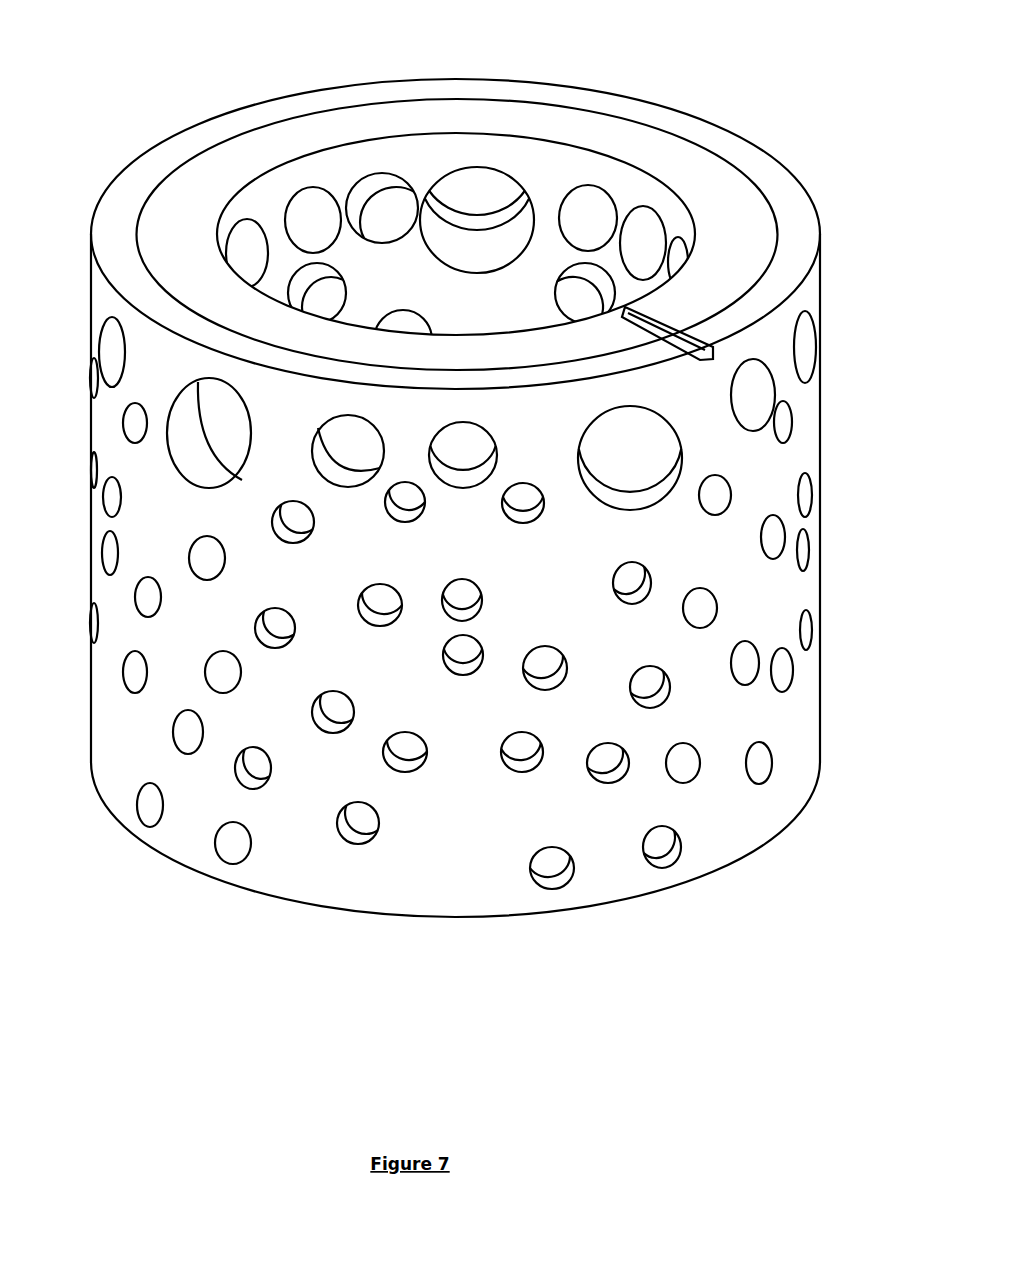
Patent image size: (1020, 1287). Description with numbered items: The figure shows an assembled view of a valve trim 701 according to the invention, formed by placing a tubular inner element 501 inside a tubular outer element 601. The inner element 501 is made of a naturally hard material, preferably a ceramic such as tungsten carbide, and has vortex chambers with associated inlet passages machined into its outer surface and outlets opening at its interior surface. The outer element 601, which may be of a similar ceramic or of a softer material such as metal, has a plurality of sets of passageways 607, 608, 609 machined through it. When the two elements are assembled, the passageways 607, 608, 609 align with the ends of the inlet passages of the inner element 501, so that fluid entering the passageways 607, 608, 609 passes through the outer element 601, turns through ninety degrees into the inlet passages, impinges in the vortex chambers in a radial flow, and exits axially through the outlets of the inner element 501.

The valve trim 701 is at (450, 492).
The tubular outer element 601 is at (583, 75).
The tubular inner element 501 is at (615, 138).
The passageway 607 is at (144, 812).
The passageway 608 is at (241, 848).
The passageway 609 is at (191, 738).